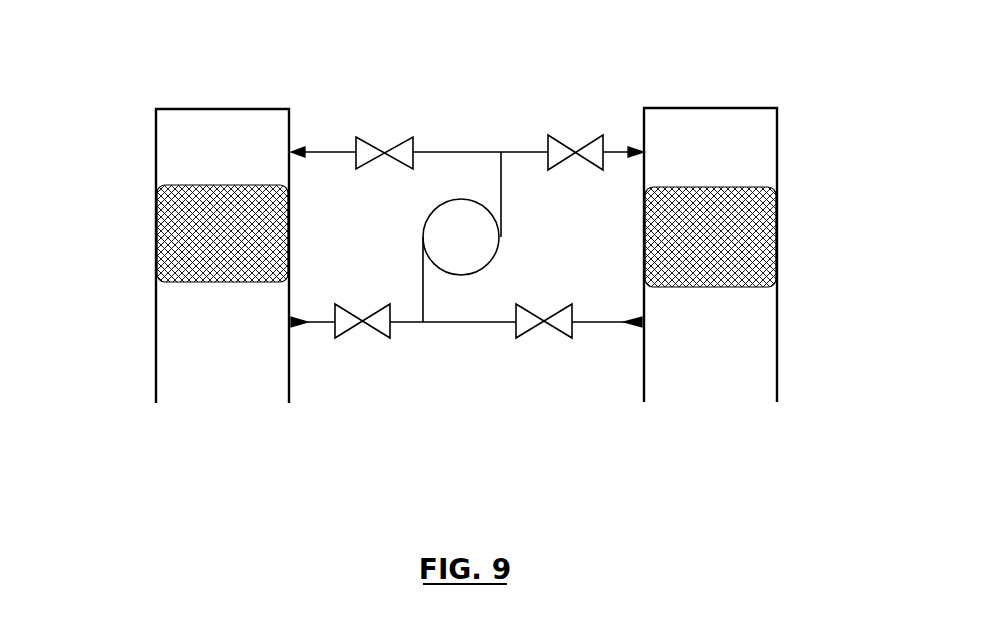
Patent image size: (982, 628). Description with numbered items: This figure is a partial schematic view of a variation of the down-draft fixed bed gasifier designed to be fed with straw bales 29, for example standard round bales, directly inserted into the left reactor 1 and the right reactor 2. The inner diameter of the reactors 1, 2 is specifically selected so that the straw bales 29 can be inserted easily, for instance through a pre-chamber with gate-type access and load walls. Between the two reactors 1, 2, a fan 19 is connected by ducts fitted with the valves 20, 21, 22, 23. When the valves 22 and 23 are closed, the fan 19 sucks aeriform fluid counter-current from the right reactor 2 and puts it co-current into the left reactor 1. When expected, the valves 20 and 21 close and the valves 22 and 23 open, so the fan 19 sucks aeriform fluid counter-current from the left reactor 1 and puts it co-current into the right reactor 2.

The left reactor 1 is at (162, 108).
The right reactor 2 is at (757, 108).
The fan 19 is at (432, 224).
The valve 20 is at (370, 146).
The valve 21 is at (528, 330).
The valve 22 is at (343, 326).
The valve 23 is at (560, 148).
The straw bales 29 is at (183, 238).